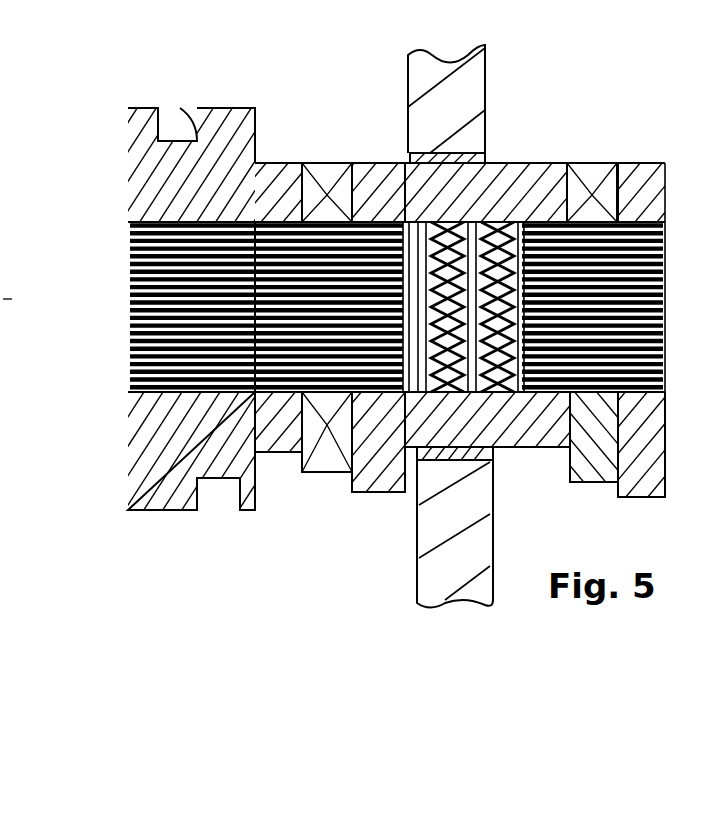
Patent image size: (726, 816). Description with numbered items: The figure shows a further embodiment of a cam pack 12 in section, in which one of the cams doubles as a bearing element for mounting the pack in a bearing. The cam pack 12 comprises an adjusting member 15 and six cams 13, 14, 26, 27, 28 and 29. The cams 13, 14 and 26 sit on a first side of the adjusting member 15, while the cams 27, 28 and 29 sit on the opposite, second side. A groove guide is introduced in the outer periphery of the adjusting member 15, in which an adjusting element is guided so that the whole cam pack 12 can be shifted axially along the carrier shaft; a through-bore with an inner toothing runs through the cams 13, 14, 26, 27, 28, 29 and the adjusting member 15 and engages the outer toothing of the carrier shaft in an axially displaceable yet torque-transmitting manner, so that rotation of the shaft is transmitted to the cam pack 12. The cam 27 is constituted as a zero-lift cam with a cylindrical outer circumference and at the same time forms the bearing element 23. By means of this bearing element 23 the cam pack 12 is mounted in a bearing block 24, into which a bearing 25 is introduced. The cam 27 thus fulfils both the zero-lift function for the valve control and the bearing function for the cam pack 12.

The cam pack 12 is at (383, 640).
The cam 13 is at (275, 455).
The cam 14 is at (325, 475).
The adjusting member 15 is at (160, 510).
The bearing element 23 is at (406, 178).
The bearing block 24 is at (487, 72).
The bearing 25 is at (487, 156).
The cam 26 is at (378, 492).
The cam 27 is at (530, 448).
The cam 28 is at (590, 482).
The cam 29 is at (645, 497).